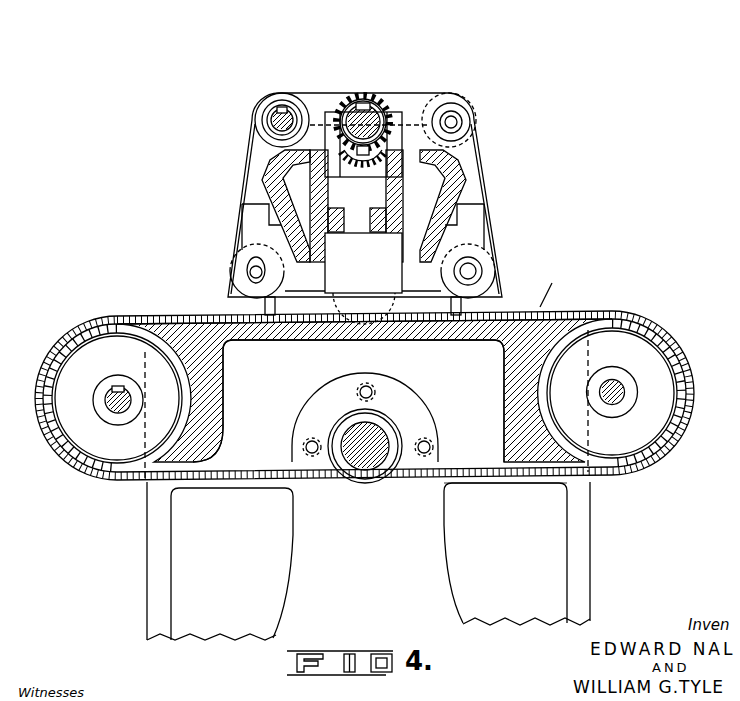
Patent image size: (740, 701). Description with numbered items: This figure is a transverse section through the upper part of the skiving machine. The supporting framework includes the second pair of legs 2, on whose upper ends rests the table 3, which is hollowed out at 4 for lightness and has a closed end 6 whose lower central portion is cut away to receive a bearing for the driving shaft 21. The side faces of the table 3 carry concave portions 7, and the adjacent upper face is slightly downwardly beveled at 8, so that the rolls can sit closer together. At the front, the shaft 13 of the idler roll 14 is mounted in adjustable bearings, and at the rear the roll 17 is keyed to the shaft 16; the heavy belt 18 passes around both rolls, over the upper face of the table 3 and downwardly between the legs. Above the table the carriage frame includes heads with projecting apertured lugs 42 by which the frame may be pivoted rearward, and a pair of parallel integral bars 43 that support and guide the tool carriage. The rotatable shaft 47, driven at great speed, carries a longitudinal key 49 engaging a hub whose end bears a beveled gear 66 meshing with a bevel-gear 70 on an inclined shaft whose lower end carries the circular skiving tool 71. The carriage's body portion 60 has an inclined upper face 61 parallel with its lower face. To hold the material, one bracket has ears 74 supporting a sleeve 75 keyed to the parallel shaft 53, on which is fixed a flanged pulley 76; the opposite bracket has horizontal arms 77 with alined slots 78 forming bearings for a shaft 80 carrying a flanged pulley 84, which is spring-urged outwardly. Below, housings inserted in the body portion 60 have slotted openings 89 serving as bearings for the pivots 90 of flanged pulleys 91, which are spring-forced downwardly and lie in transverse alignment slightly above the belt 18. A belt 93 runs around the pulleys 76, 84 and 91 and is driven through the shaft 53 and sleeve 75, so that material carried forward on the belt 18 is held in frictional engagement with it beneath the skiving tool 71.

The second pair of legs 2 is at (368, 561).
The table 3 is at (370, 320).
The hollowed-out portion 4 is at (458, 389).
The closed end 6 is at (364, 343).
The concave portions 7 is at (172, 320).
The downwardly-beveled portion 8 is at (543, 287).
The shaft of idler roll 13 is at (624, 392).
The idler roll 14 is at (657, 329).
The shaft 16 is at (105, 400).
The roll 17 is at (98, 320).
The heavy belt 18 is at (511, 478).
The driving shaft 21 is at (377, 433).
The projecting apertured lugs 42 is at (270, 300).
The integral bars 43 is at (285, 188).
The rotatable shaft 47 is at (350, 103).
The longitudinally-extending key 49 is at (375, 103).
The shaft 53 is at (277, 127).
The body portion of carriage 60 is at (363, 263).
The upper face of body portion 61 is at (337, 172).
The beveled gear 66 is at (387, 103).
The bevel-gear 70 is at (367, 173).
The skiving tool 71 is at (378, 288).
The ears 74 is at (262, 120).
The sleeve 75 is at (290, 110).
The flanged pulley 76 is at (282, 99).
The horizontal arms 77 is at (476, 120).
The alined slots 78 is at (455, 114).
The shaft 80 is at (451, 116).
The flanged pulley 84 is at (463, 113).
The slotted openings 89 is at (482, 272).
The pivots 90 is at (470, 277).
The flanged pulleys 91 is at (236, 275).
The belt 93 is at (481, 152).